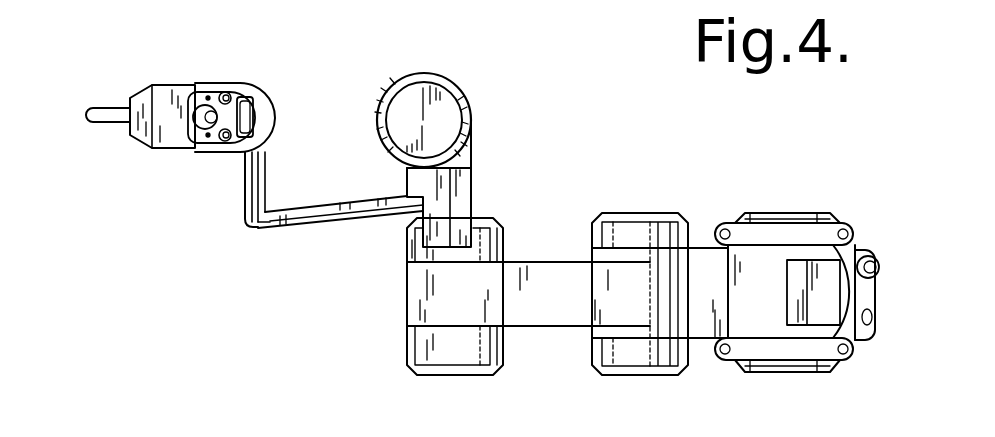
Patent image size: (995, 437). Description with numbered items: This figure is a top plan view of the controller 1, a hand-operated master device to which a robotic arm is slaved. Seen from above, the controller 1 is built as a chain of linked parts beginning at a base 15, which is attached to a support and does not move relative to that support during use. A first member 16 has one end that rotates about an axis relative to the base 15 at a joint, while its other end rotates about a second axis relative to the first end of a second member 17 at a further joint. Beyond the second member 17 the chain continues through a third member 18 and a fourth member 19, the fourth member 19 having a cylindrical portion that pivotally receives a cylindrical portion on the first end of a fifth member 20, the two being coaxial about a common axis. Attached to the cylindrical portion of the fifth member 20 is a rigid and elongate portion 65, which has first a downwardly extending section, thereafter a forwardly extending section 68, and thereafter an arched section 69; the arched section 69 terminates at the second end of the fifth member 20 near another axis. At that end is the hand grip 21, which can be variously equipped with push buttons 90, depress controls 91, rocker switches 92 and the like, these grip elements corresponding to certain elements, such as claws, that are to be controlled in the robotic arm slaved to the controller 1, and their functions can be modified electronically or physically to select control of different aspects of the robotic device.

The controller 1 is at (360, 322).
The base 15 is at (782, 214).
The first member 16 is at (857, 243).
The second member 17 is at (723, 252).
The third member 18 is at (533, 262).
The fourth member 19 is at (473, 188).
The fifth member 20 is at (318, 209).
The hand grip 21 is at (156, 85).
The elongate portion 65 is at (352, 225).
The forwardly extending section 68 is at (278, 230).
The arched section 69 is at (245, 175).
The push buttons 90 is at (200, 128).
The depress controls 91 is at (96, 107).
The rocker switches 92 is at (247, 98).